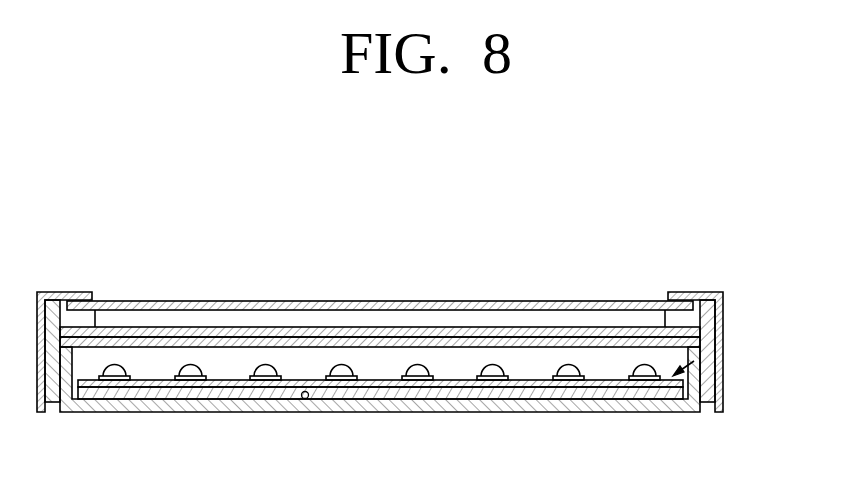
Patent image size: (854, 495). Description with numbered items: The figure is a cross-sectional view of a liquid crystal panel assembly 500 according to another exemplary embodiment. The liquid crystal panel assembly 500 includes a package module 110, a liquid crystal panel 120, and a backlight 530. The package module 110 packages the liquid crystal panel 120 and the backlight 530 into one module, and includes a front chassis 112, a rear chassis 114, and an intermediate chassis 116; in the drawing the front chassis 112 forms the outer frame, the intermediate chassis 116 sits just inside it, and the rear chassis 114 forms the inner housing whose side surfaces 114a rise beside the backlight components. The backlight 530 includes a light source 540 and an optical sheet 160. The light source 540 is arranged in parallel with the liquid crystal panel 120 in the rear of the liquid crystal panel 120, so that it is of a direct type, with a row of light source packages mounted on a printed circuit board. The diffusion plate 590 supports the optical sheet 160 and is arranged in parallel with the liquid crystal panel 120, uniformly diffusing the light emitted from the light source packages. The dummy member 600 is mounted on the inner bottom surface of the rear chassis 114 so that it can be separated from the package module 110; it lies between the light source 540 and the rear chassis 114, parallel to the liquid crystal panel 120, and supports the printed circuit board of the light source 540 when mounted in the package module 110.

The liquid crystal panel assembly 500 is at (442, 157).
The package module 110 is at (130, 238).
The front chassis 112 is at (40, 318).
The intermediate chassis 116 is at (53, 316).
The rear chassis 114 is at (70, 363).
The side surfaces of the rear chassis 114a is at (307, 400).
The liquid crystal panel 120 is at (194, 305).
The backlight 530 is at (777, 317).
The optical sheet 160 is at (701, 326).
The diffusion plate 590 is at (701, 346).
The light source 540 is at (681, 384).
The dummy member 600 is at (670, 393).